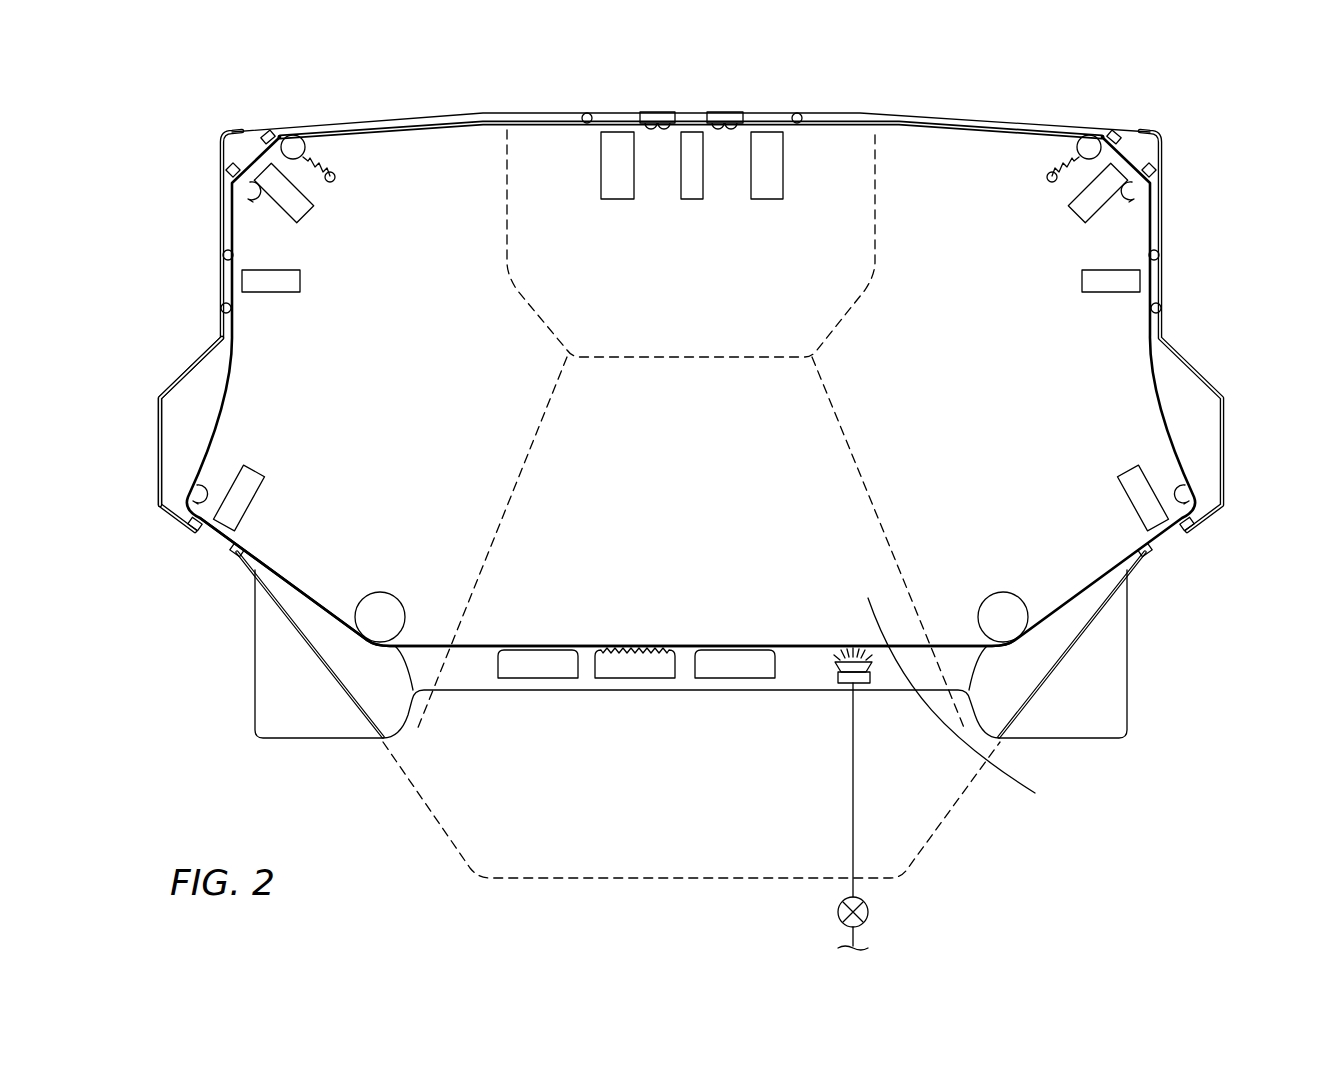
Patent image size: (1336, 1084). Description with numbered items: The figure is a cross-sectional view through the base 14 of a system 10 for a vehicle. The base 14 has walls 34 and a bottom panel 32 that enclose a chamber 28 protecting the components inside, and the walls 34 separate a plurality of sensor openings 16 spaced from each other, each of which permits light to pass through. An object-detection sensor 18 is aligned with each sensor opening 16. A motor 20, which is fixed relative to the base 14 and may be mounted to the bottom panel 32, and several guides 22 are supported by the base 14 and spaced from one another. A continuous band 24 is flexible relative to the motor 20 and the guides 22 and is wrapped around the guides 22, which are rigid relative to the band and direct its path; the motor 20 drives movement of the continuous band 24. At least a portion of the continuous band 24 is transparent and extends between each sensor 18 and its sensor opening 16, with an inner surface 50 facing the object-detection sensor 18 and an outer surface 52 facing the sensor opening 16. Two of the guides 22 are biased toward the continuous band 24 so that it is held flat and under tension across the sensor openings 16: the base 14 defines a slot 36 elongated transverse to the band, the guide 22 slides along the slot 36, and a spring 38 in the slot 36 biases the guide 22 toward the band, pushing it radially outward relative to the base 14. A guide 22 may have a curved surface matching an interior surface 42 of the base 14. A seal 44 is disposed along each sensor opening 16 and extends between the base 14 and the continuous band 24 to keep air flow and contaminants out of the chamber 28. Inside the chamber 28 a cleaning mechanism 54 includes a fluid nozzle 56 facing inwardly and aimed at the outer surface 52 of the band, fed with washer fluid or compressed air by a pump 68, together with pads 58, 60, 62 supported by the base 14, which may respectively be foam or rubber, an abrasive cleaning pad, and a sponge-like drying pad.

The system 10 is at (1298, 128).
The base 14 is at (158, 475).
The sensor opening 16 is at (240, 135).
The object-detection sensor 18 is at (300, 215).
The motor 20 is at (385, 592).
The guide 22 is at (300, 138).
The continuous band 24 is at (490, 645).
The chamber 28 is at (971, 703).
The bottom panel 32 is at (682, 337).
The wall 34 is at (915, 115).
The slot 36 is at (327, 176).
The spring 38 is at (318, 164).
The interior surface 42 is at (157, 425).
The seal 44 is at (268, 132).
The inner surface 50 is at (288, 585).
The outer surface 52 is at (383, 740).
The cleaning mechanism 54 is at (647, 812).
The fluid nozzle 56 is at (843, 685).
The pad 58 is at (728, 682).
The pad 60 is at (634, 682).
The pad 62 is at (538, 682).
The pump 68 is at (868, 912).